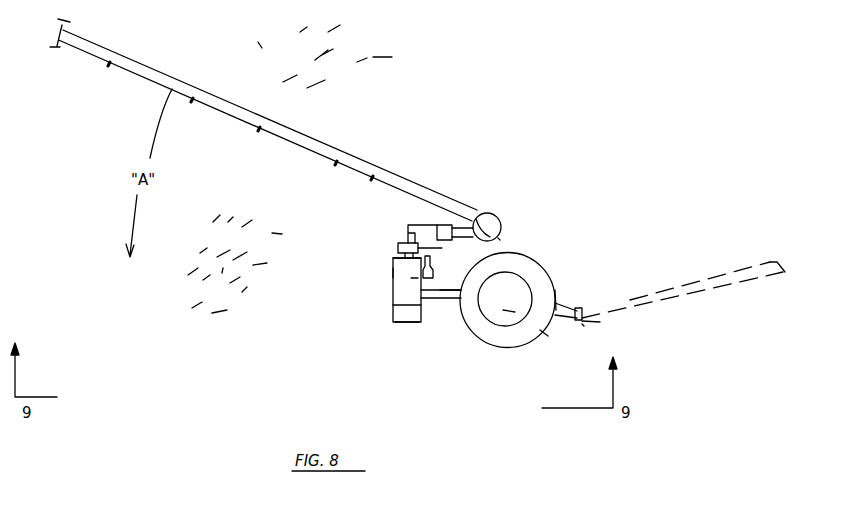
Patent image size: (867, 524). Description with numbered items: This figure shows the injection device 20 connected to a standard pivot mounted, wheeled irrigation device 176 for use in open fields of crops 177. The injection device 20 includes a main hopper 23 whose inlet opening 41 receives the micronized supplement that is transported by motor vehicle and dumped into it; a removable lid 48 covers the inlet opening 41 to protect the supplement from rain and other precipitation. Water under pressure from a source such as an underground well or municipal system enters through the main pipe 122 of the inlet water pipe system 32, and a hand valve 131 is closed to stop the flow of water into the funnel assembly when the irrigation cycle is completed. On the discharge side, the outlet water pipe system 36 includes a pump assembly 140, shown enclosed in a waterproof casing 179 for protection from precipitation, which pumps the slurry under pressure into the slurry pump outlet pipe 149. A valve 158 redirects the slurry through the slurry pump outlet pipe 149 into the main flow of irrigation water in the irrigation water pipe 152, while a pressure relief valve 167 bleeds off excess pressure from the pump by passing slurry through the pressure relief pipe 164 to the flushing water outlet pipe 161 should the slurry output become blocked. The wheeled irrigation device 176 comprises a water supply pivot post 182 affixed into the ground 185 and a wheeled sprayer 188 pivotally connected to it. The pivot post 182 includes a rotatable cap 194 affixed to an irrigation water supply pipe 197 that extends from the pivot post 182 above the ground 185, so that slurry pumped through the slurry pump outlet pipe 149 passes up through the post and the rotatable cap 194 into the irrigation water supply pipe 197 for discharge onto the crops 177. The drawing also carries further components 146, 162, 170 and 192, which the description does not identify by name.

The injection device 20 is at (572, 254).
The main hopper 23 is at (566, 295).
The inlet water pipe system 32 is at (591, 317).
The outlet water pipe system 36 is at (436, 320).
The inlet opening 41 is at (548, 325).
The removable lid 48 is at (503, 310).
The main pipe 122 is at (593, 331).
The hand valve 131 is at (582, 322).
The pump assembly 140 is at (384, 295).
The drive connection 146 is at (440, 291).
The slurry pump outlet pipe 149 is at (404, 229).
The irrigation water pipe 152 is at (495, 240).
The valve 158 is at (398, 248).
The flushing water outlet pipe 161 is at (442, 249).
The coupling 162 is at (437, 226).
The pressure relief pipe 164 is at (392, 260).
The pressure relief valve 167 is at (418, 278).
The housing base 170 is at (393, 324).
The wheeled irrigation device 176 is at (445, 142).
The crops 177 is at (280, 26).
The waterproof casing 179 is at (392, 272).
The water supply pivot post 182 is at (520, 213).
The ground 185 is at (282, 357).
The wheeled sprayer 188 is at (333, 140).
The frame bar 192 is at (732, 274).
The rotatable cap 194 is at (483, 223).
The irrigation water supply pipe 197 is at (413, 187).